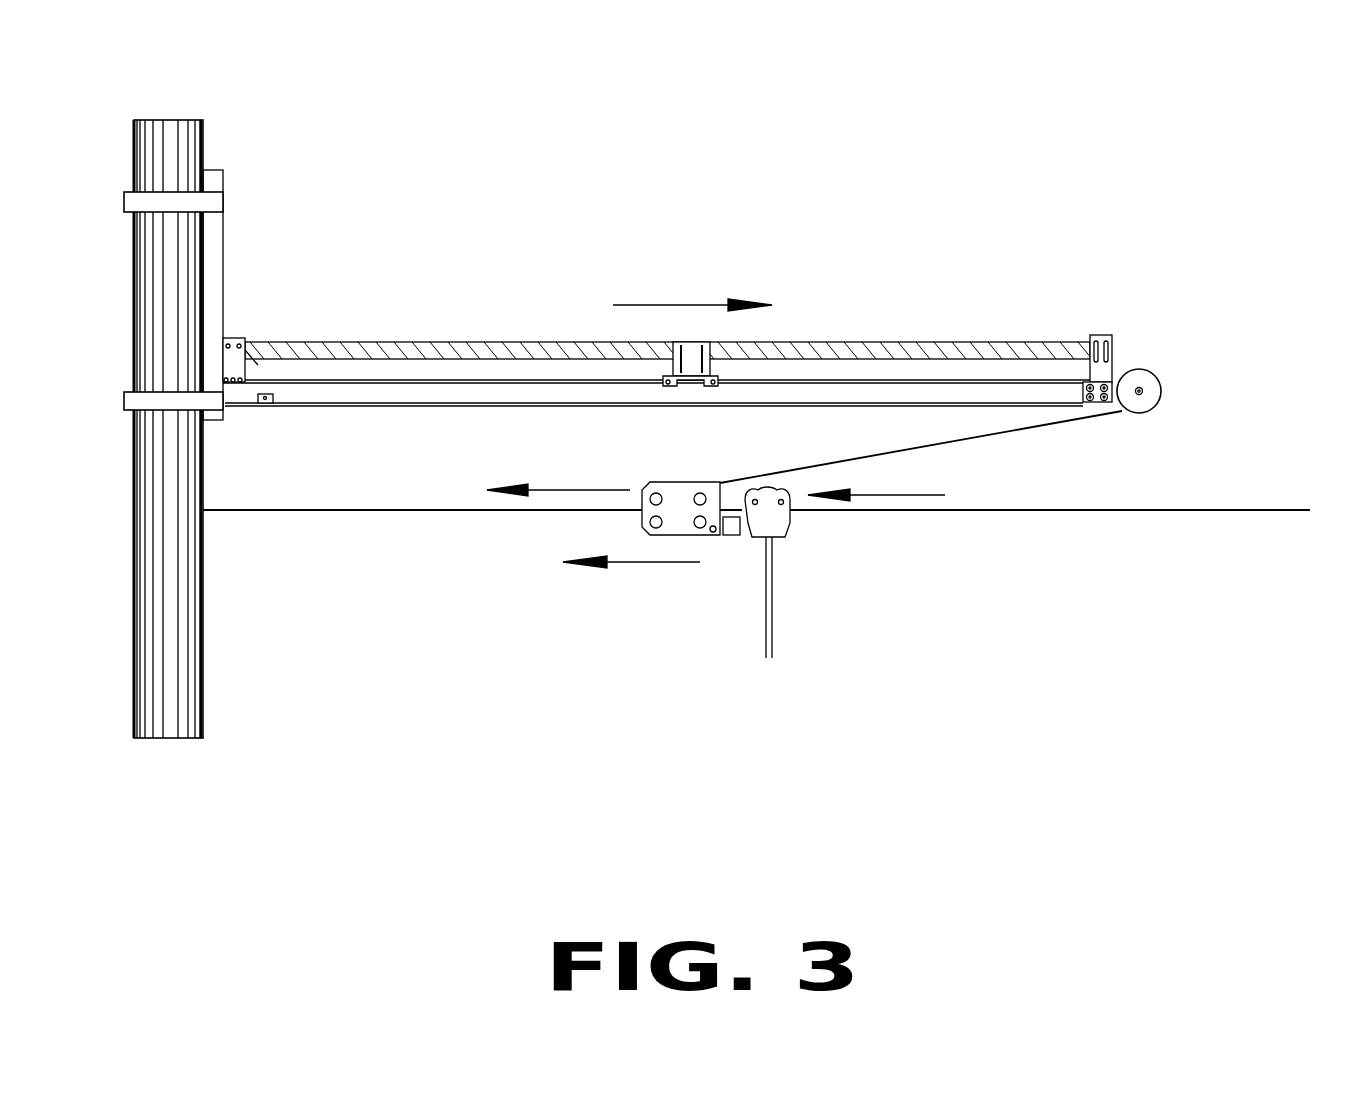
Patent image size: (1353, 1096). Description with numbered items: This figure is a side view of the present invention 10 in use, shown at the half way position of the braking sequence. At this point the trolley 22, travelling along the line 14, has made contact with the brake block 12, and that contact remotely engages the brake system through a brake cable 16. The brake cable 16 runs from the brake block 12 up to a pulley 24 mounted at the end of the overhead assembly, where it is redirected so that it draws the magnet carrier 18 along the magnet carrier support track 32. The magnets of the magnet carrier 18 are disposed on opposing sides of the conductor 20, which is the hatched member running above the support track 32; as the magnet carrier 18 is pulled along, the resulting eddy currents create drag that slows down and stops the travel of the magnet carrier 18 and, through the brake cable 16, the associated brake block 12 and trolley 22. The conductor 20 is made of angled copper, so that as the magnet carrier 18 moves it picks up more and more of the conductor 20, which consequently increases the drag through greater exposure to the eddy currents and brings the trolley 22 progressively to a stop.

The present invention 10 is at (1092, 221).
The brake block 12 is at (680, 533).
The gate arm 14 is at (1138, 511).
The brake cable 16 is at (960, 442).
The magnet carrier 18 is at (695, 350).
The conductor 20 is at (947, 342).
The trolley 22 is at (793, 523).
The pulley 24 is at (1154, 373).
The magnet carrier support track 32 is at (420, 395).